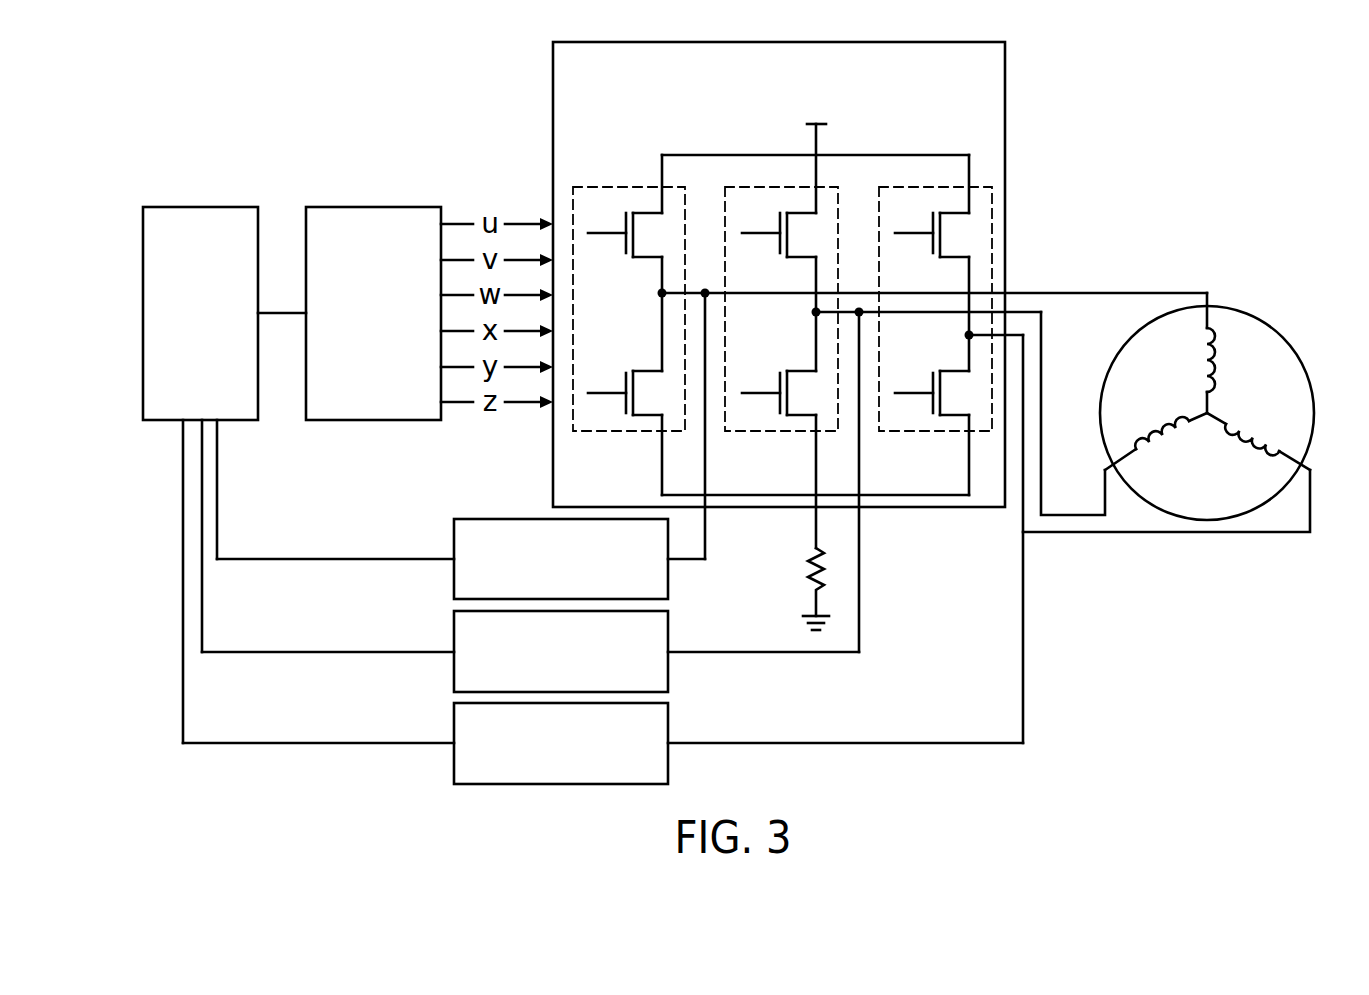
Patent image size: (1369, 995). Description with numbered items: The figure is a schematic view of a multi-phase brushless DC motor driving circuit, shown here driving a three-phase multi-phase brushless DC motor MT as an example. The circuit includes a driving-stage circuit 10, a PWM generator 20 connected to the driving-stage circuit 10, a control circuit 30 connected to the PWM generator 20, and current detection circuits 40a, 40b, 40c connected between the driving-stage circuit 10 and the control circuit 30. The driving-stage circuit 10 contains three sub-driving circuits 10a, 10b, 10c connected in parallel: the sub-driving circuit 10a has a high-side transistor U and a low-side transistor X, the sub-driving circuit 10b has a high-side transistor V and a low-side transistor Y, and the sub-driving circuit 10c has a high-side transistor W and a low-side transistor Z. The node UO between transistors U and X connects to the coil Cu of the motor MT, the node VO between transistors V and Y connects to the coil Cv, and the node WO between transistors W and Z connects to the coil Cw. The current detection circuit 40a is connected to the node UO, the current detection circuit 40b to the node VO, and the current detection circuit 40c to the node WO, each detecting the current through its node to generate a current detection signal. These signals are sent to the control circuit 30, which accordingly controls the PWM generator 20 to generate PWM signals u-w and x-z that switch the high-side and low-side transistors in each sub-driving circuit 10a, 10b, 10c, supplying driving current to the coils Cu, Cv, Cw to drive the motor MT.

The driving-stage circuit 10 is at (553, 65).
The sub-driving circuit 10a is at (625, 431).
The sub-driving circuit 10b is at (779, 431).
The sub-driving circuit 10c is at (933, 431).
The PWM generator 20 is at (381, 207).
The control circuit 30 is at (199, 207).
The current detection circuit 40a is at (454, 582).
The current detection circuit 40b is at (454, 674).
The current detection circuit 40c is at (454, 766).
The multi-phase brushless DC motor MT is at (1175, 390).
The coil Cu is at (1233, 353).
The coil Cv is at (1124, 413).
The coil Cw is at (1166, 468).